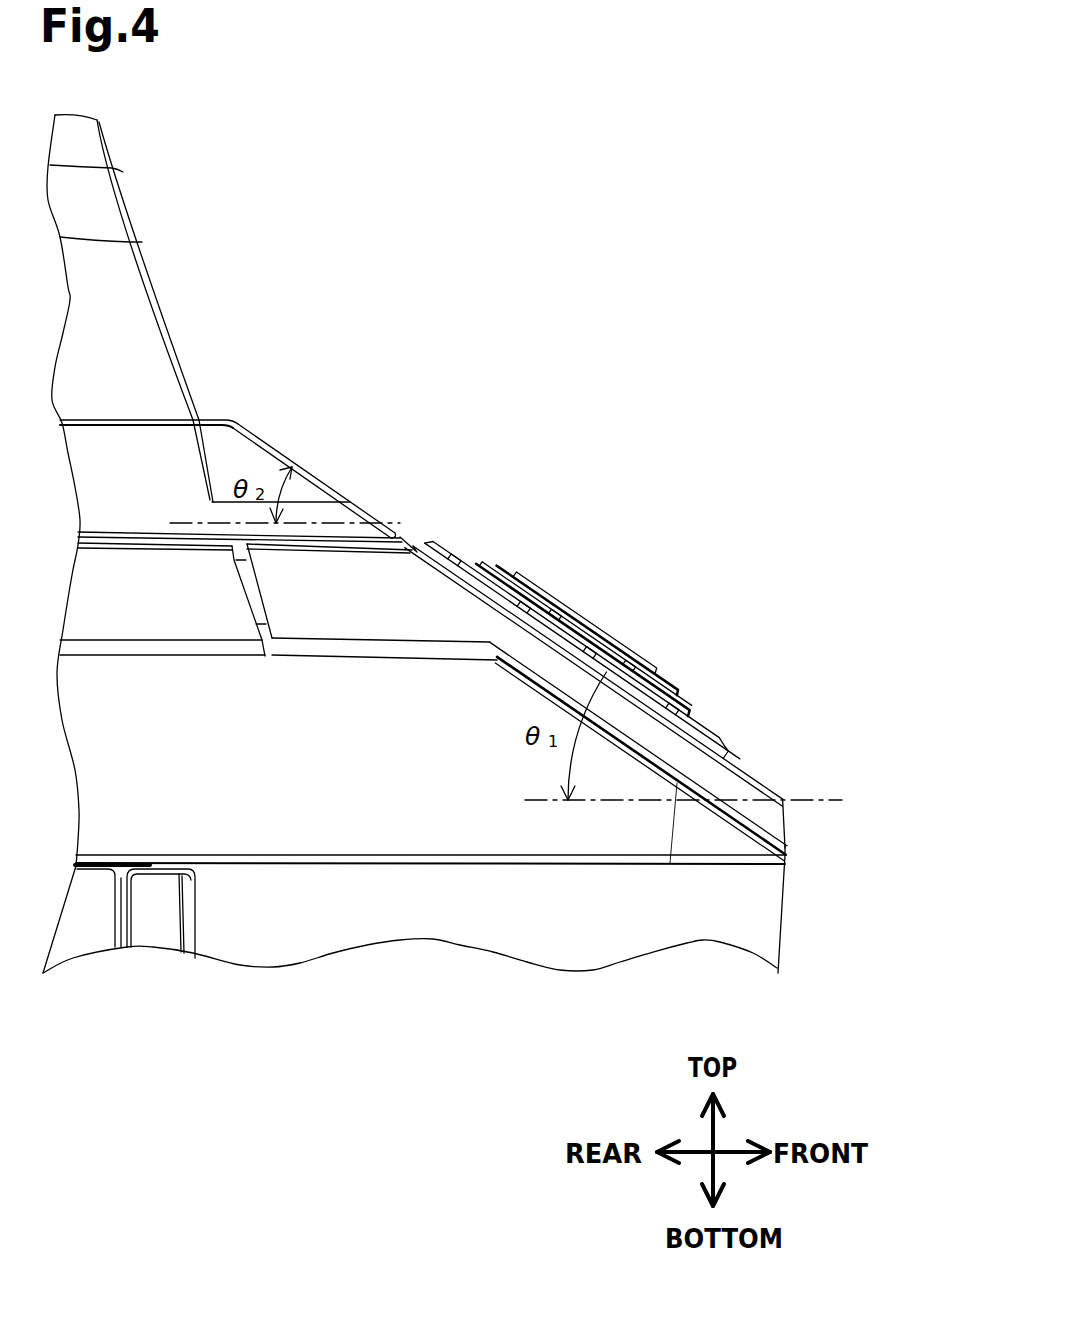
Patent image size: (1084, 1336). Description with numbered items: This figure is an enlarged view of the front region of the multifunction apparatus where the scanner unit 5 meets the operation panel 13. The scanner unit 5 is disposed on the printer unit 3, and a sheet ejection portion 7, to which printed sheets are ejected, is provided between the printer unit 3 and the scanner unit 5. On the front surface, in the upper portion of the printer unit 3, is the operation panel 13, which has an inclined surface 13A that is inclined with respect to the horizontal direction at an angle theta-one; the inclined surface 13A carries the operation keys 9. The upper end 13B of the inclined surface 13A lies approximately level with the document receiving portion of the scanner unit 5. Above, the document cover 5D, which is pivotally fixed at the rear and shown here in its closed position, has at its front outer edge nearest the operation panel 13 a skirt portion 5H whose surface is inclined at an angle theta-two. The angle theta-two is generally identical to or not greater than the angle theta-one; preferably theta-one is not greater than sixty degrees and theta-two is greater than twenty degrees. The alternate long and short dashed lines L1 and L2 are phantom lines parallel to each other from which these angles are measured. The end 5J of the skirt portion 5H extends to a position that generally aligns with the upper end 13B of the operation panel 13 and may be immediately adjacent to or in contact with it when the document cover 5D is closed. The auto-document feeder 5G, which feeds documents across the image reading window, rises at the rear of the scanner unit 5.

The printer unit 3 is at (92, 917).
The scanner unit 5 is at (215, 360).
The auto-document feeder 5G is at (113, 152).
The document cover 5D is at (130, 447).
The skirt portion 5H is at (237, 447).
The end of the skirt portion 5J is at (417, 540).
The sheet ejection portion 7 is at (748, 913).
The operation keys 9 is at (477, 548).
The operation panel 13 is at (770, 786).
The inclined surface 13A is at (748, 778).
The upper end 13B is at (430, 547).
The phantom line L1 is at (810, 799).
The phantom line L2 is at (393, 523).